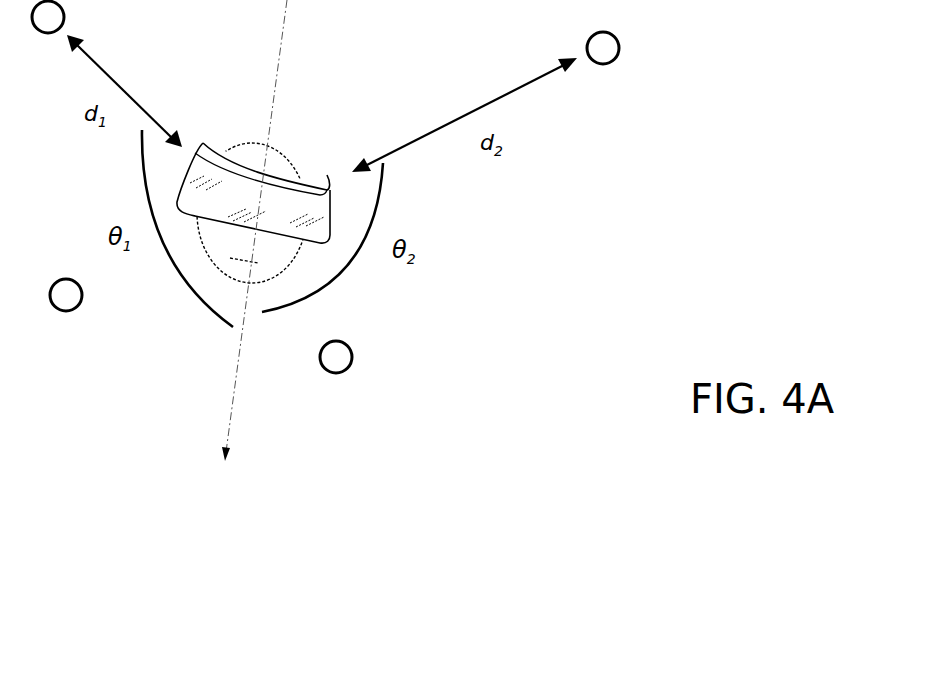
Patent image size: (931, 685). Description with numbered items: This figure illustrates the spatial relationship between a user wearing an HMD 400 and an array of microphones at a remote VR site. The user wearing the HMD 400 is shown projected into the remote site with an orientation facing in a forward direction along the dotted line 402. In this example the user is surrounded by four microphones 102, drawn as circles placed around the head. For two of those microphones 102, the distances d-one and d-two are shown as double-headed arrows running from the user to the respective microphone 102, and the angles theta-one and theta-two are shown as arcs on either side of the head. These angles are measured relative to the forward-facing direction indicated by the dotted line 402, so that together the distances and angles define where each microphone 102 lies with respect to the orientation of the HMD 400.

The HMD 400 is at (244, 106).
The dotted line 402 is at (192, 420).
The microphones 102 is at (362, 386).